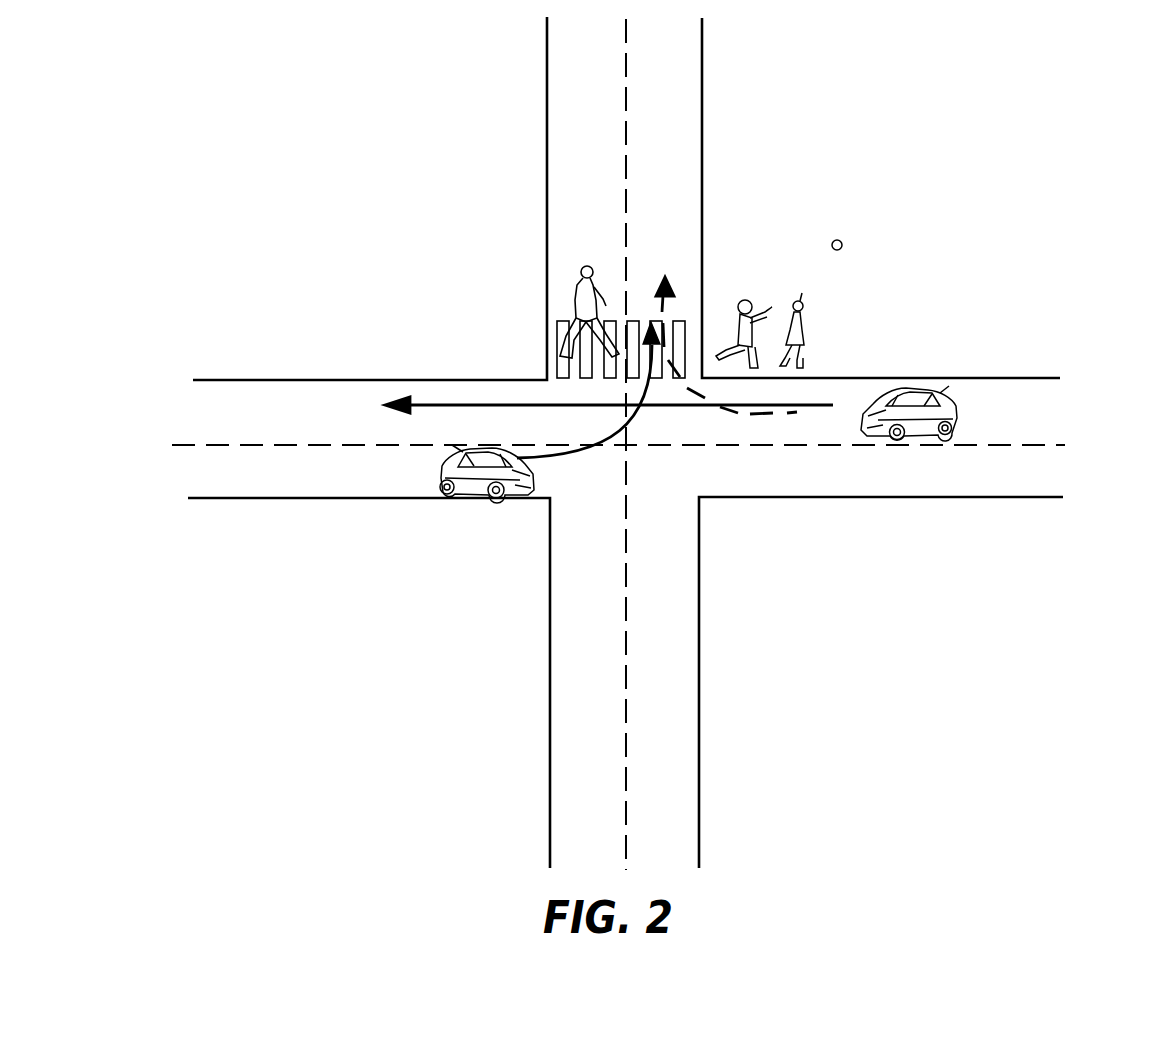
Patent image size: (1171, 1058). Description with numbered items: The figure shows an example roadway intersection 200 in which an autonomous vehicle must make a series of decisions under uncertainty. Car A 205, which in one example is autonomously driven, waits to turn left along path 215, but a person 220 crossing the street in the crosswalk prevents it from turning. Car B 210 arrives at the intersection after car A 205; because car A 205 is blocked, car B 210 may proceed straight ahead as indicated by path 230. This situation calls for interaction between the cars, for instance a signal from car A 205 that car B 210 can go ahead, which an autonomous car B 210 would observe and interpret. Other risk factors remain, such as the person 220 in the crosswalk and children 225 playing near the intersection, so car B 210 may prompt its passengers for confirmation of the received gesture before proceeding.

The roadway intersection 200 is at (1074, 116).
The car A 205 is at (441, 478).
The car B 210 is at (956, 415).
The path 215 is at (624, 441).
The person 220 is at (583, 268).
The children 225 is at (801, 289).
The path 230 is at (758, 420).